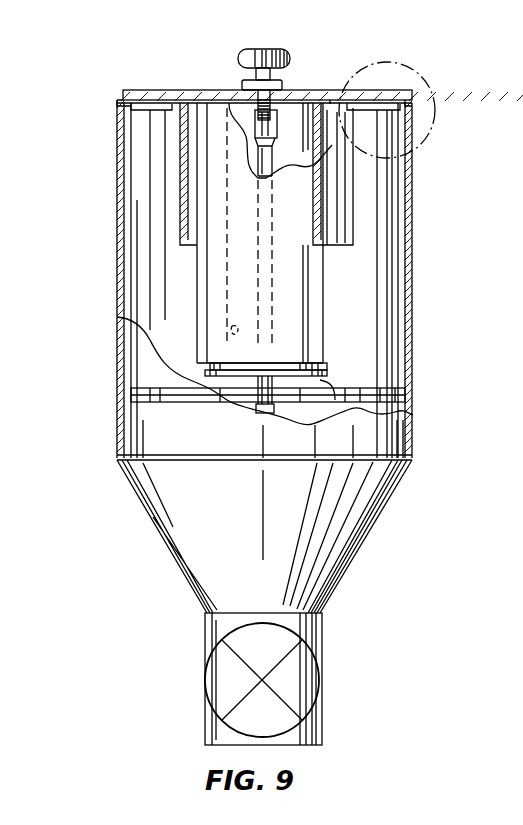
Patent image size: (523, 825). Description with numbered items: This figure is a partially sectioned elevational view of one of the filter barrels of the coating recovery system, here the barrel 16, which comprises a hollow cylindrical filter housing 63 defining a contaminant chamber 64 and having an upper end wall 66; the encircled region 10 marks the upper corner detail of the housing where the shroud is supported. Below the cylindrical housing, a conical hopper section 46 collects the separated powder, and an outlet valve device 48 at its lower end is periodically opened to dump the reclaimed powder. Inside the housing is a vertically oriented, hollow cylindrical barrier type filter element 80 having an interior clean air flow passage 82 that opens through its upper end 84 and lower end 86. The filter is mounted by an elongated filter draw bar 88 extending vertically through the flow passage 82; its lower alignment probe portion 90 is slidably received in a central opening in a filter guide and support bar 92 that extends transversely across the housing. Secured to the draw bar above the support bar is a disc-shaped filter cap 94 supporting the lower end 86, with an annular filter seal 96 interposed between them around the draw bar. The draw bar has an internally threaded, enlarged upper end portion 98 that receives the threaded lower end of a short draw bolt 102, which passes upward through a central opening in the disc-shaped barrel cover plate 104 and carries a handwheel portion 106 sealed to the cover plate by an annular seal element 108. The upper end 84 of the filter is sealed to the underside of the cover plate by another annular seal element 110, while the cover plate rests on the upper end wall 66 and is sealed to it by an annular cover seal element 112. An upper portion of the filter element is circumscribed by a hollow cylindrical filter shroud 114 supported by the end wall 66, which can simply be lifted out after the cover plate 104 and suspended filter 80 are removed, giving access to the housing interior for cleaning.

The detail circle region 10 is at (424, 147).
The barrel 16 is at (414, 444).
The hopper section 46 is at (366, 560).
The outlet valve device 48 is at (324, 712).
The filter housing 63 is at (411, 252).
The contaminant chamber 64 is at (398, 312).
The upper end wall 66 is at (430, 93).
The filter element 80 is at (332, 312).
The clean air flow passage 82 is at (232, 328).
The upper end 84 is at (236, 90).
The lower end 86 is at (327, 364).
The filter draw bar 88 is at (268, 312).
The alignment probe portion 90 is at (266, 414).
The filter guide and support bar 92 is at (402, 391).
The filter cap 94 is at (335, 402).
The filter seal 96 is at (212, 368).
The enlarged upper end portion 98 is at (256, 148).
The draw bolt 102 is at (332, 100).
The barrel cover plate 104 is at (136, 89).
The handwheel portion 106 is at (280, 50).
The annular seal element 108 is at (297, 90).
The annular seal element 110 is at (195, 101).
The cover seal element 112 is at (119, 101).
The filter shroud 114 is at (342, 222).